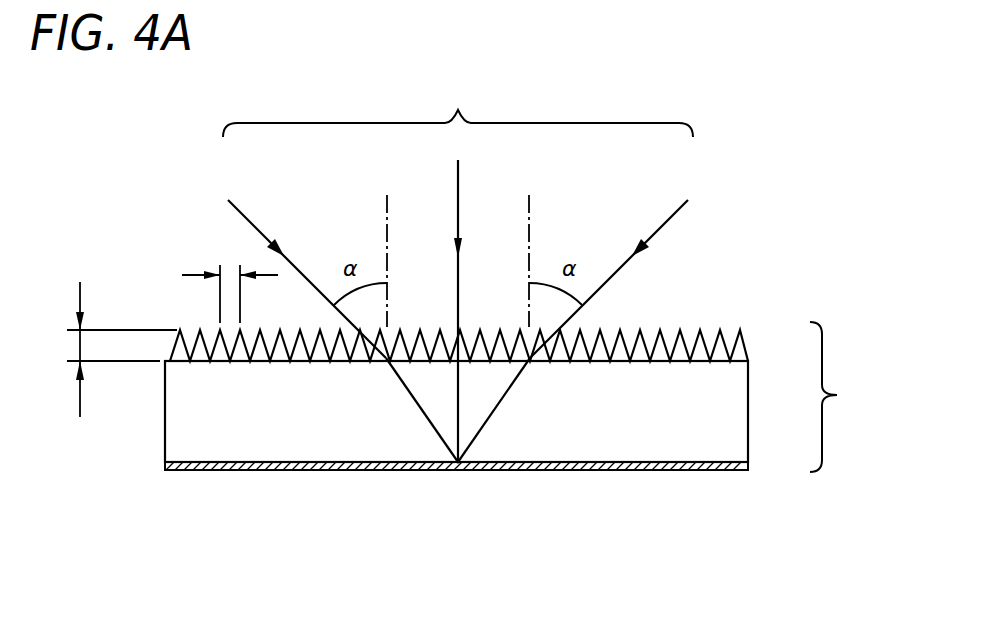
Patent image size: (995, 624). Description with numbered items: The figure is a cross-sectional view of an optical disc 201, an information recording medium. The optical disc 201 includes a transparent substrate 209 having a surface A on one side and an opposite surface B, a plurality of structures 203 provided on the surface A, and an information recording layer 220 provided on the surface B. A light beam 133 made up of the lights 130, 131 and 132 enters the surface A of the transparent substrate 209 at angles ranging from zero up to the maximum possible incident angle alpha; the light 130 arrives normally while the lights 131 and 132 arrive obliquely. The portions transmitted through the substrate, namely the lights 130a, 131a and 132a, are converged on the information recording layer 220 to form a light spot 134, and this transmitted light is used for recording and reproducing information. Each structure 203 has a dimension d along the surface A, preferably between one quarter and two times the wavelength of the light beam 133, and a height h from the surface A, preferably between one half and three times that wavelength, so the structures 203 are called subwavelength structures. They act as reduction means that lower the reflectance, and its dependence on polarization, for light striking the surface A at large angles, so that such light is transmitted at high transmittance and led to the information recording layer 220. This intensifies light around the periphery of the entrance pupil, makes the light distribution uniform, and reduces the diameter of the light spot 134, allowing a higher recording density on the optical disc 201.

The light beam 133 is at (458, 103).
The light 130 is at (458, 183).
The transmitted light 130a is at (456, 383).
The light 131 is at (240, 214).
The transmitted light 131a is at (430, 418).
The light 132 is at (673, 215).
The transmitted light 132a is at (497, 408).
The light spot 134 is at (458, 470).
The structure 203 is at (720, 340).
The information recording layer 220 is at (185, 423).
The transparent substrate 209 is at (165, 470).
The optical disc 201 is at (849, 397).
The surface A is at (700, 361).
The surface B is at (712, 462).
The dimension d is at (230, 280).
The height h is at (115, 349).